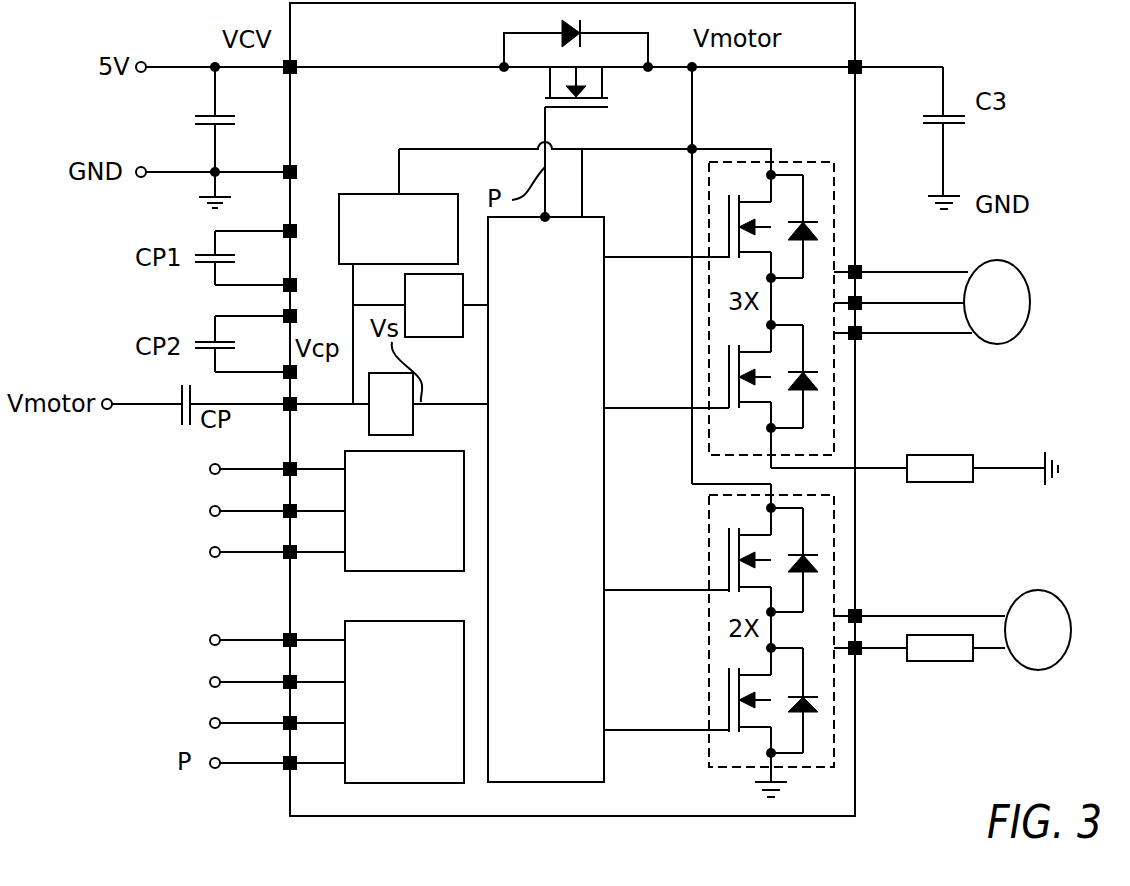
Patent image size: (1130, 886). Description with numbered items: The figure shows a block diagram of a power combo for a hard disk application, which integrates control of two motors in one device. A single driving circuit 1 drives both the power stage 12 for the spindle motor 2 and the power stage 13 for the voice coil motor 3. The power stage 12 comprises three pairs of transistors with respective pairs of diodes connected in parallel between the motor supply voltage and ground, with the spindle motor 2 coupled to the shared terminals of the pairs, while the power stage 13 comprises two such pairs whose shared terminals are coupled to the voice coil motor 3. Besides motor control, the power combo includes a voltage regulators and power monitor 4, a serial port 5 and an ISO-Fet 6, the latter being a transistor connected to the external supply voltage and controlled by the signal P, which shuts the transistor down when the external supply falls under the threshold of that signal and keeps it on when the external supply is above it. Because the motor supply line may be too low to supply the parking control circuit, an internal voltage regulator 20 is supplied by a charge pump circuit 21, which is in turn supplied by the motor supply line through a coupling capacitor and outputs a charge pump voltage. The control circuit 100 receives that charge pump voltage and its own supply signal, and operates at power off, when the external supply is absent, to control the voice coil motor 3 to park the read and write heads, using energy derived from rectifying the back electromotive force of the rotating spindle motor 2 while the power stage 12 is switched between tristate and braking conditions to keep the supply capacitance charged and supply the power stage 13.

The driving circuit 1 is at (537, 510).
The spindle motor 2 is at (989, 316).
The voice coil motor 3 is at (1030, 644).
The voltage regulators and power monitor 4 is at (397, 708).
The serial port 5 is at (397, 518).
The ISO-Fet 6 is at (525, 78).
The power stage 12 is at (688, 290).
The power stage 13 is at (704, 647).
The internal voltage regulator 20 is at (376, 413).
The charge pump circuit 21 is at (383, 238).
The control circuit 100 is at (412, 313).